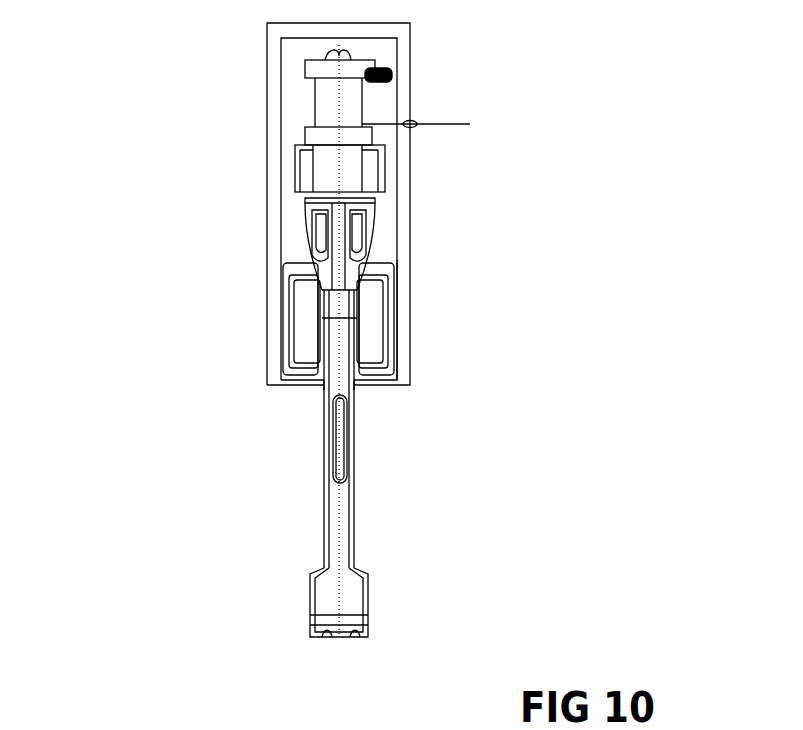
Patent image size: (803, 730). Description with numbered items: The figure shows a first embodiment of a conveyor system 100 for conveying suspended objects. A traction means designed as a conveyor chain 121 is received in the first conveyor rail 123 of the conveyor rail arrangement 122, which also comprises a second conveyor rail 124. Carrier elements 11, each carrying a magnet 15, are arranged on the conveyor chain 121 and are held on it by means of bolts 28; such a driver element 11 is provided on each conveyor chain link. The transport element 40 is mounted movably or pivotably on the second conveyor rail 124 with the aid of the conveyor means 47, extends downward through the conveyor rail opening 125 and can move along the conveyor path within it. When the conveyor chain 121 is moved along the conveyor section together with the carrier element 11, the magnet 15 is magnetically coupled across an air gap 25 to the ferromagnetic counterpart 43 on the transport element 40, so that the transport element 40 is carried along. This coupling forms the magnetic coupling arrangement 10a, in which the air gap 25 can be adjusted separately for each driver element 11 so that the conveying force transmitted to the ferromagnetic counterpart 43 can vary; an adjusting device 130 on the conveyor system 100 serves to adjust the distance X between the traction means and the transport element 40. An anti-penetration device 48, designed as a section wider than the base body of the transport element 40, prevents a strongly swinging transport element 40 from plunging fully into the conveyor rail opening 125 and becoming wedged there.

The conveyor system 100 is at (163, 154).
The conveyor chain 121 is at (333, 110).
The adjusting device 130 is at (392, 74).
The first conveyor rail 123 is at (441, 80).
The distance X is at (430, 126).
The carrier element 11 is at (297, 155).
The magnet 15 is at (298, 188).
The bolt 28 is at (398, 163).
The magnetic coupling arrangement 10a is at (389, 209).
The air gap 25 is at (298, 200).
The ferromagnetic counterpart 43 is at (350, 208).
The conveyor means 47 is at (392, 322).
The conveyor rail arrangement 122 is at (275, 358).
The second conveyor rail 124 is at (398, 367).
The conveyor rail opening 125 is at (316, 398).
The transport element 40 is at (350, 410).
The anti-penetration device 48 is at (353, 608).